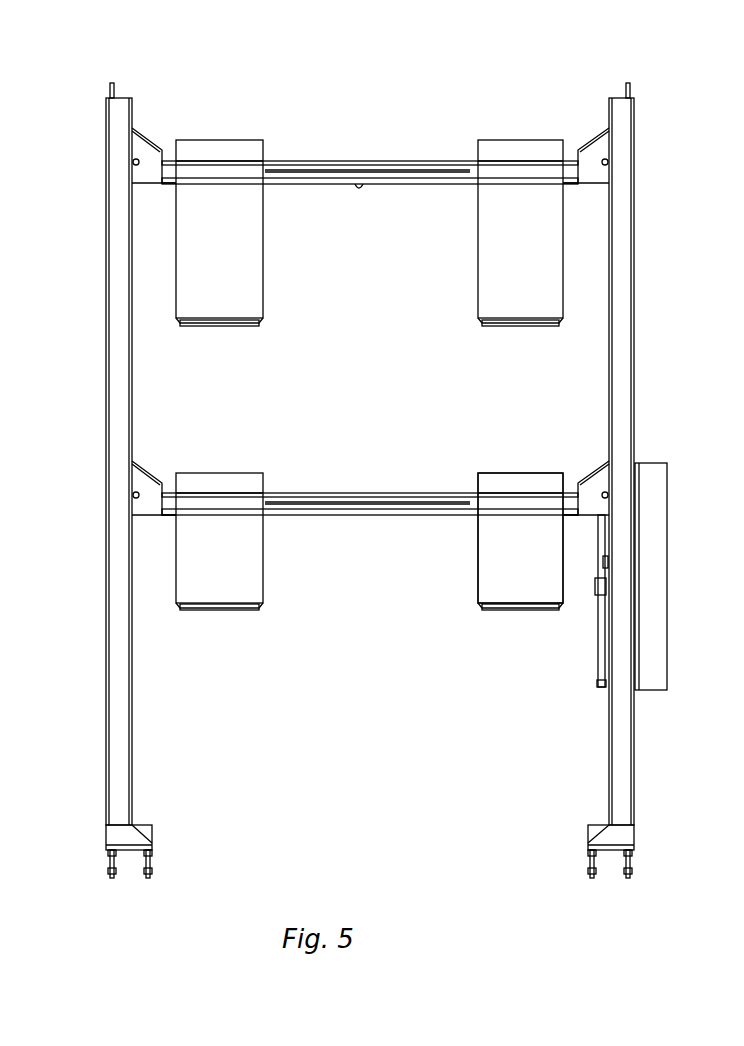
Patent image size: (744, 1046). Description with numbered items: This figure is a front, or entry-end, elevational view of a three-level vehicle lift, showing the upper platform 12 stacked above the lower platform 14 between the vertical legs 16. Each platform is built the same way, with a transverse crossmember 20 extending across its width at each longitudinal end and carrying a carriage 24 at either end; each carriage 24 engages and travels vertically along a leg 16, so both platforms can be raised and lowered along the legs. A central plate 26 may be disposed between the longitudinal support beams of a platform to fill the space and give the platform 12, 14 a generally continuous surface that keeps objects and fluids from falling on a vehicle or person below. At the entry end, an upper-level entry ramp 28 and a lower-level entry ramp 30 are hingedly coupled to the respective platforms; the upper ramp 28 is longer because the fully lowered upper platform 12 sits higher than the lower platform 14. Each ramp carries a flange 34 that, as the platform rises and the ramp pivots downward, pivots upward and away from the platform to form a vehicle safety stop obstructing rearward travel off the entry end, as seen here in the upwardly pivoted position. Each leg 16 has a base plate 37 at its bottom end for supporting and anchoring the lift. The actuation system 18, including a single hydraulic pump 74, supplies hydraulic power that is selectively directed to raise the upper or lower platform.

The upper platform 12 is at (328, 160).
The lower platform 14 is at (420, 500).
The leg 16 is at (637, 270).
The actuation system 18 is at (686, 545).
The transverse crossmember 20 is at (357, 178).
The carriage 24 is at (150, 140).
The central plate 26 is at (352, 490).
The upper-level entry ramp 28 is at (478, 293).
The lower-level entry ramp 30 is at (478, 582).
The flange 34 is at (258, 143).
The base plate 37 is at (590, 850).
The hydraulic pump 74 is at (667, 645).